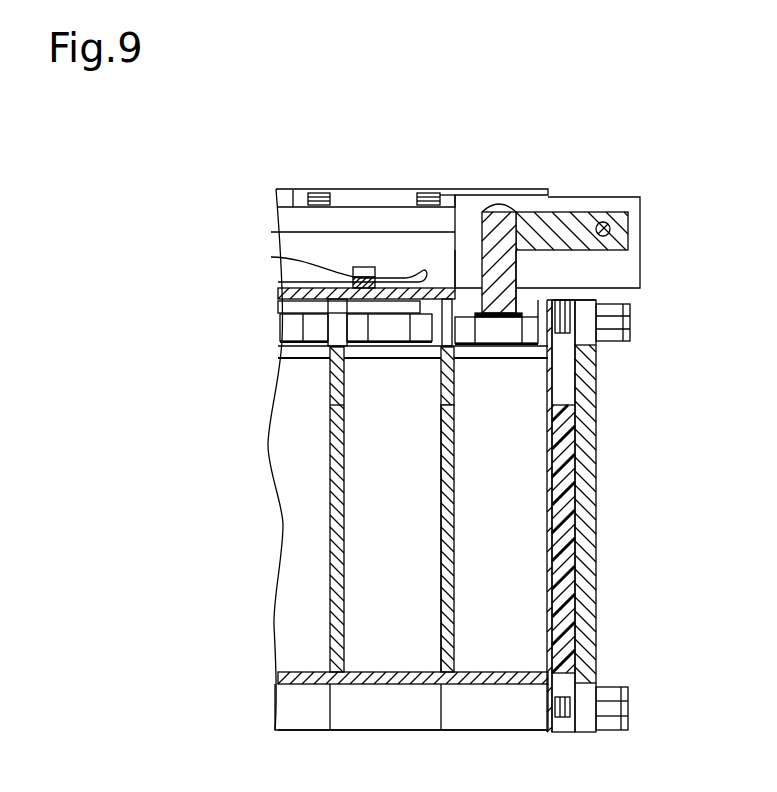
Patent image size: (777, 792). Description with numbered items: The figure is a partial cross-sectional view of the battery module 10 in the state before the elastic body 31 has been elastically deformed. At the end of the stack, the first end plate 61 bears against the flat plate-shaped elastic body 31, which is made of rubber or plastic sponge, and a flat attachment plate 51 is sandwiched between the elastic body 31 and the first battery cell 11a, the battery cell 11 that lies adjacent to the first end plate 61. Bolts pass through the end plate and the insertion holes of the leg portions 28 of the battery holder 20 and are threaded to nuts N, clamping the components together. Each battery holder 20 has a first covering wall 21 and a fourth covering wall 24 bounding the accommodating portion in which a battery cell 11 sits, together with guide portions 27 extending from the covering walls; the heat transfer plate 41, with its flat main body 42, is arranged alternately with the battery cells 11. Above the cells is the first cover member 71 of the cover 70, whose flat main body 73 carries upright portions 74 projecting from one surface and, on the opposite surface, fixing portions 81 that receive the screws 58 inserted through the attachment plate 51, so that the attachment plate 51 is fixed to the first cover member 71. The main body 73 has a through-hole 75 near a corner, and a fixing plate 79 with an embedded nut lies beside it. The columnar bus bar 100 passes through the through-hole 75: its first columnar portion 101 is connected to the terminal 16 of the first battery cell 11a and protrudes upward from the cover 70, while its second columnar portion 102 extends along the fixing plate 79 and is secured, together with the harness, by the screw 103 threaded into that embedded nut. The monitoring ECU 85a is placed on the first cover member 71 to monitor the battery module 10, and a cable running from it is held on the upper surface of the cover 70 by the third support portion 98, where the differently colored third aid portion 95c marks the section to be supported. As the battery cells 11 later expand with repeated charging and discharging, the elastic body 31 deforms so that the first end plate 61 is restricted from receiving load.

The battery module 10 is at (199, 212).
The battery cell 11 is at (396, 658).
The first battery cell 11a is at (545, 632).
The terminal 16 is at (500, 312).
The battery holder 20 is at (455, 733).
The first covering wall 21 is at (373, 676).
The fourth covering wall 24 is at (336, 384).
The guide portion 27 is at (350, 197).
The leg portion 28 is at (362, 725).
The elastic body 31 is at (567, 527).
The heat transfer plate 41 is at (455, 470).
The main body 42 is at (448, 512).
The attachment plate 51 is at (568, 435).
The screw 58 is at (558, 300).
The first end plate 61 is at (590, 568).
The cover 70 is at (283, 197).
The first cover member 71 is at (288, 203).
The main body 73 is at (298, 293).
The upright portion 74 is at (398, 210).
The through-hole 75 is at (480, 277).
The fixing plate 79 is at (640, 207).
The fixing portion 81 is at (533, 315).
The monitoring ECU 85a is at (300, 232).
The third aid portion 95c is at (312, 262).
The third support portion 98 is at (363, 267).
The bus bar 100 is at (481, 213).
The first columnar portion 101 is at (520, 265).
The second columnar portion 102 is at (578, 212).
The screw 103 is at (612, 231).
The nut N is at (619, 342).